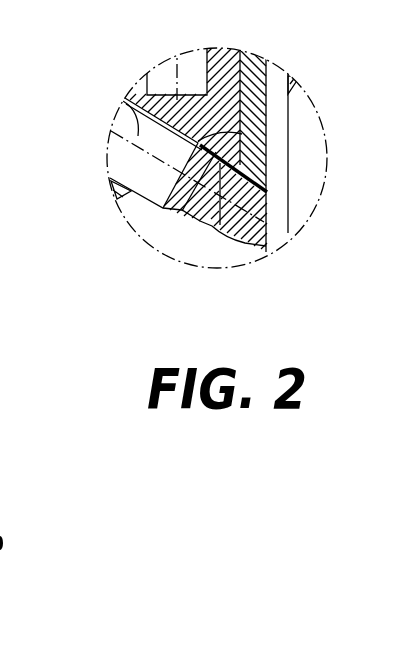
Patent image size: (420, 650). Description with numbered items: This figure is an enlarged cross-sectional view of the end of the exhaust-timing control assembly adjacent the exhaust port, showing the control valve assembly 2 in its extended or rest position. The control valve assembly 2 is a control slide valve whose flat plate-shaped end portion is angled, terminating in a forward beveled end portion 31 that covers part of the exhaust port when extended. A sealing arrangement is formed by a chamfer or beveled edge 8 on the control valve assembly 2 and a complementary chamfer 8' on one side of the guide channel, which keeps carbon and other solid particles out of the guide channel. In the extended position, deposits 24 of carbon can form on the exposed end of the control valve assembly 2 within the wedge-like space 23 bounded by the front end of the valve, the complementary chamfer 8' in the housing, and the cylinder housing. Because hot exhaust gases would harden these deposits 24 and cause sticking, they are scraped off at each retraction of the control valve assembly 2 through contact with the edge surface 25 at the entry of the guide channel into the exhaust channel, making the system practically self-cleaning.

The control valve assembly 2 is at (120, 95).
The chamfer or beveled edge 8 is at (242, 146).
The complementary chamfer 8' is at (290, 114).
The wedge-like space 23 is at (246, 169).
The deposits 24 is at (250, 181).
The edge surface 25 is at (212, 227).
The forward beveled end portion 31 is at (289, 208).